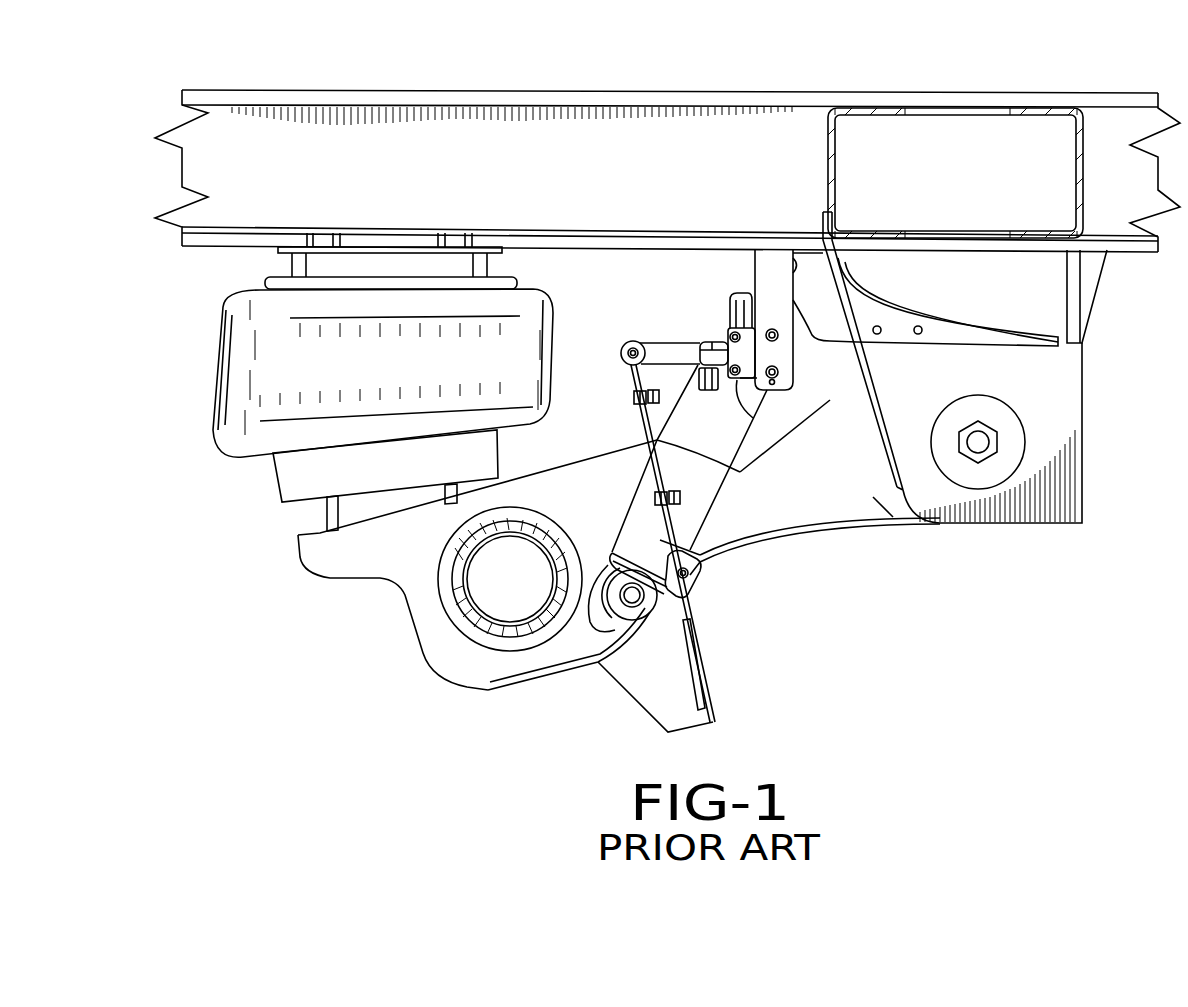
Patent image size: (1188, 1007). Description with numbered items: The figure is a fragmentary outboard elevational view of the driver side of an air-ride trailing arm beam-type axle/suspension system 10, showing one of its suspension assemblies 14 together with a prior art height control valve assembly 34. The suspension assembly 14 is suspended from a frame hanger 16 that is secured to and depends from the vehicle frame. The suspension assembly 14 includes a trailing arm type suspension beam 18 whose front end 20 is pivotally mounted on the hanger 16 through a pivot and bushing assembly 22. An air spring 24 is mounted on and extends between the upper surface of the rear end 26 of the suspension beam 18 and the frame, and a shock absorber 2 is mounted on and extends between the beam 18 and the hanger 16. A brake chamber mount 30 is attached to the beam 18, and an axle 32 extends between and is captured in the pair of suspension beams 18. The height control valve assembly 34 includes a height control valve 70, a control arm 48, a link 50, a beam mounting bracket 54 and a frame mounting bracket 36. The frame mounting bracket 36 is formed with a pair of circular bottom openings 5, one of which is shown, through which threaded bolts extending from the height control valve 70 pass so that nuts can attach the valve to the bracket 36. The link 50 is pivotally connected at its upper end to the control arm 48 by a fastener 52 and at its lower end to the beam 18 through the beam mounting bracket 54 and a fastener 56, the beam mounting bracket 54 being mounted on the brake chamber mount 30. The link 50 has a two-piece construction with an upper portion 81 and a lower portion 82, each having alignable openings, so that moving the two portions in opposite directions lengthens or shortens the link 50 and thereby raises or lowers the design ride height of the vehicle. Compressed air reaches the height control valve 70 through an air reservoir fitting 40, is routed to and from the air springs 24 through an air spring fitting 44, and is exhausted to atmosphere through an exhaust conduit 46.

The shock absorber 2 is at (707, 449).
The circular bottom opening 5 is at (774, 386).
The axle/suspension system 10 is at (984, 627).
The suspension assembly 14 is at (829, 532).
The frame hanger 16 is at (1085, 490).
The suspension beam 18 is at (773, 503).
The front end 20 is at (876, 497).
The pivot and bushing assembly 22 is at (998, 416).
The air spring 24 is at (368, 382).
The rear end 26 is at (320, 543).
The brake chamber mount 30 is at (668, 692).
The axle 32 is at (463, 608).
The height control valve assembly 34 is at (682, 344).
The frame mounting bracket 36 is at (782, 304).
The air reservoir fitting 40 is at (747, 307).
The air spring fitting 44 is at (706, 386).
The exhaust conduit 46 is at (748, 398).
The control arm 48 is at (660, 343).
The link 50 is at (648, 481).
The fastener 52 is at (626, 348).
The beam mounting bracket 54 is at (698, 575).
The fastener 56 is at (693, 580).
The height control valve 70 is at (738, 355).
The upper portion 81 is at (637, 393).
The lower portion 82 is at (677, 523).